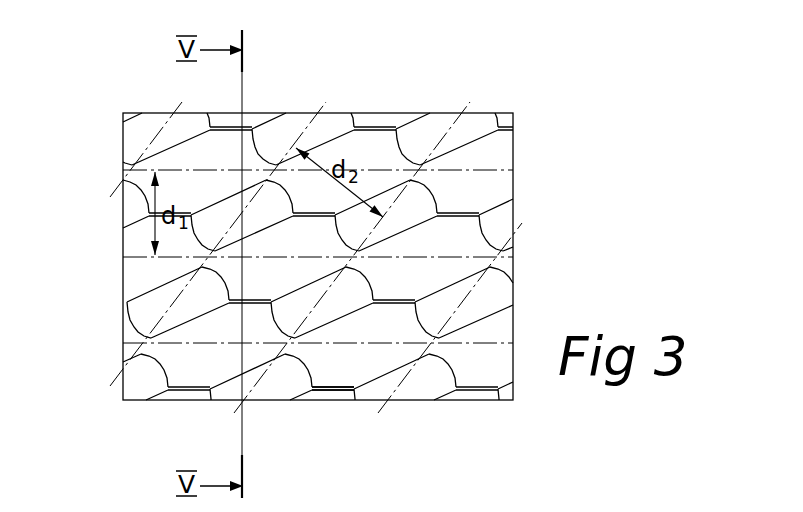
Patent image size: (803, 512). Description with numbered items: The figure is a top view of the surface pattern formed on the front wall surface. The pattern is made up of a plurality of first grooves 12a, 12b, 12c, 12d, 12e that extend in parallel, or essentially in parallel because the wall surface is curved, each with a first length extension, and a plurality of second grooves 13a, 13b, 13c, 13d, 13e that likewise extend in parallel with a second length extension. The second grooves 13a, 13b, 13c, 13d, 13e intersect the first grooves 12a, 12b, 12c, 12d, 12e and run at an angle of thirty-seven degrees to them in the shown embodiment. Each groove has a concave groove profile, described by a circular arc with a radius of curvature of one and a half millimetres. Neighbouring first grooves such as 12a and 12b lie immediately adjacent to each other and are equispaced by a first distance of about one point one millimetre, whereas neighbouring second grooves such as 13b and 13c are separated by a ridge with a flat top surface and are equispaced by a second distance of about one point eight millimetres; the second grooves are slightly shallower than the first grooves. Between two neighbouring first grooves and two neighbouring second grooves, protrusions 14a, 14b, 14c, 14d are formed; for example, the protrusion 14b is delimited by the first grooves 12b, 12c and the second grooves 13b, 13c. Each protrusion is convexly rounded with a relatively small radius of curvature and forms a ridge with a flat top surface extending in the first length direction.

The first groove 12a is at (382, 123).
The first groove 12b is at (505, 184).
The first groove 12c is at (443, 275).
The first groove 12d is at (400, 358).
The first groove 12e is at (338, 394).
The second groove 13a is at (143, 128).
The second groove 13b is at (138, 378).
The second groove 13c is at (270, 378).
The second groove 13d is at (410, 389).
The second groove 13e is at (508, 391).
The protrusion 14a is at (234, 128).
The protrusion 14b is at (316, 216).
The protrusion 14c is at (239, 303).
The protrusion 14d is at (315, 391).